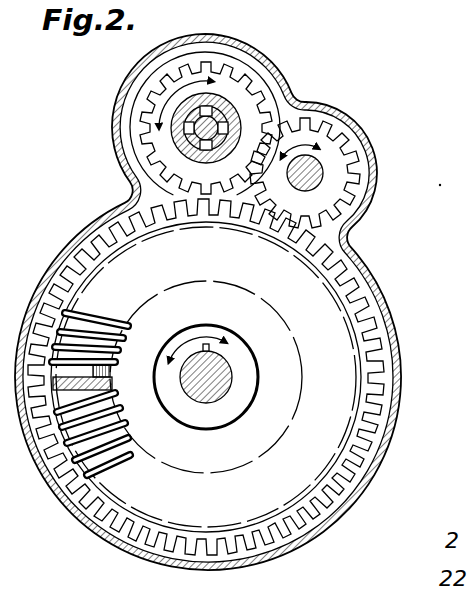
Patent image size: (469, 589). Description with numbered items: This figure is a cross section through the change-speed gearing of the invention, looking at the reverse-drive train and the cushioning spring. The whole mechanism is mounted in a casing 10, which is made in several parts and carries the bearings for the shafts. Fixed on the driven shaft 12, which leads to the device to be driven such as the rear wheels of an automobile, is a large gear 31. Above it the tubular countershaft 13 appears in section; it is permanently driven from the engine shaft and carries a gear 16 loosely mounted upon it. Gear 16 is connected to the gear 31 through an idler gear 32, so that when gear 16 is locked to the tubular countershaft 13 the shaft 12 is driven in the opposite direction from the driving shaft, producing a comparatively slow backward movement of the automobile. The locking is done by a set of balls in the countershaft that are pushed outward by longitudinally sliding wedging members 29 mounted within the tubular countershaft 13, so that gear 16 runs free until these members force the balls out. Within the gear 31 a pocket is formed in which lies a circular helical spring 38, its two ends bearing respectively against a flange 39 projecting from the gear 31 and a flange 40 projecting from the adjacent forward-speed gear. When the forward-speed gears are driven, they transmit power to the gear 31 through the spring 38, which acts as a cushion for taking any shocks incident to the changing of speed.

The casing 10 is at (402, 407).
The shaft 12 is at (213, 369).
The tubular countershaft 13 is at (100, 180).
The gear 16 is at (248, 88).
The wedging members 29 is at (156, 152).
The gear 31 is at (375, 355).
The idler gear 32 is at (362, 158).
The circular helical spring 38 is at (123, 437).
The flange 39 is at (113, 367).
The flange 40 is at (112, 387).